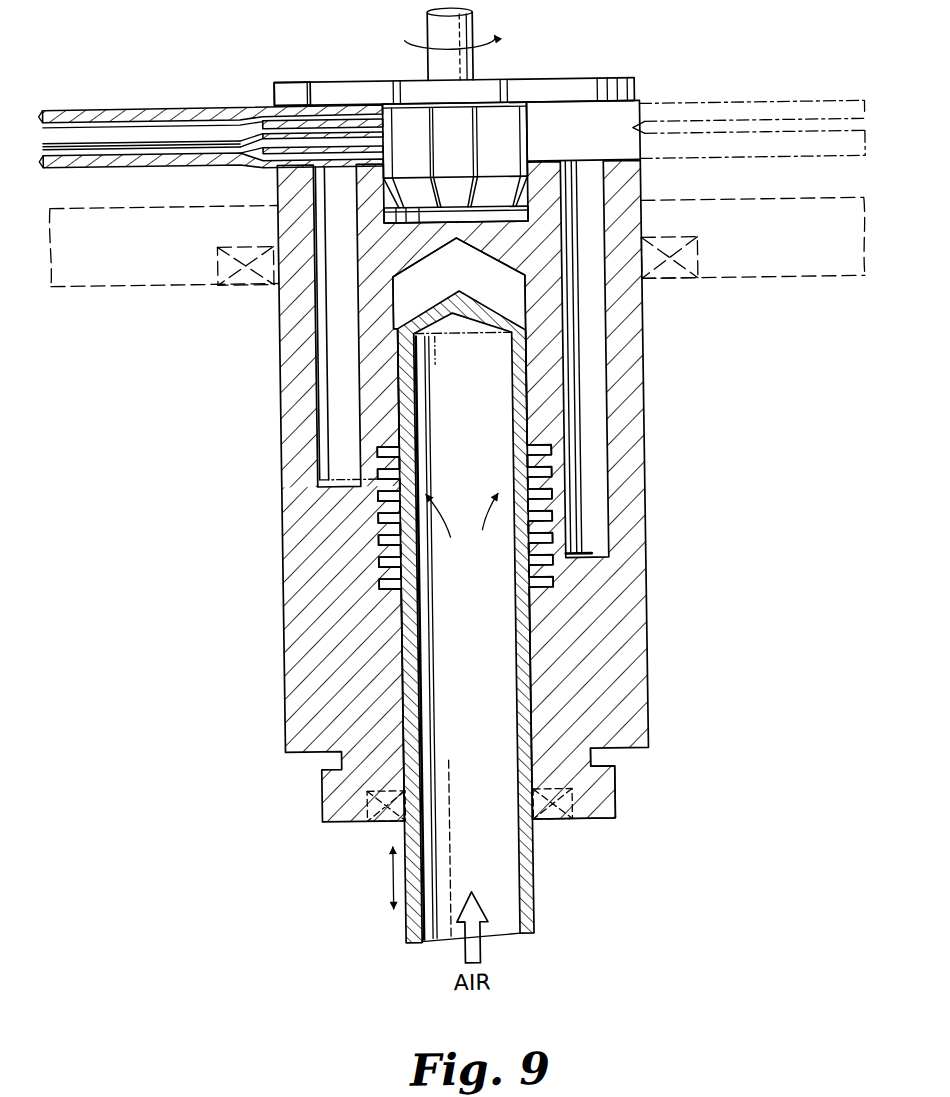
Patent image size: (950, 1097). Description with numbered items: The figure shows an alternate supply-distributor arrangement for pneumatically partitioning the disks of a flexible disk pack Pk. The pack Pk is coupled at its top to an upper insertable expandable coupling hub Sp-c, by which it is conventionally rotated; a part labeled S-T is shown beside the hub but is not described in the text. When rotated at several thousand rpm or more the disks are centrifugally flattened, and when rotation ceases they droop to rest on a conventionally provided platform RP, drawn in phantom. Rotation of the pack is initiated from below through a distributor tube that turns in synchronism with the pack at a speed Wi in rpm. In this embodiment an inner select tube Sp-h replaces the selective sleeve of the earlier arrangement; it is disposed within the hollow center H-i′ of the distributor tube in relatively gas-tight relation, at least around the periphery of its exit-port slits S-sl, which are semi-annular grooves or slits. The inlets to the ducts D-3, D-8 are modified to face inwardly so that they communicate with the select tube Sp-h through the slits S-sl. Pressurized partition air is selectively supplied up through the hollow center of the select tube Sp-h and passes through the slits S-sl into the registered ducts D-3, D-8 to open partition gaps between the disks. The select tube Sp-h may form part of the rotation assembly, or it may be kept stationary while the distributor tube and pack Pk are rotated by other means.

The flexible disk pack Pk is at (126, 104).
The spindle top block S-T is at (276, 107).
The coupling hub Sp-c is at (545, 77).
The platform RP is at (757, 203).
The hollow center of distributor tube H-i′ is at (481, 282).
The exit-port slits S-sl is at (508, 482).
The duct D-3 is at (313, 478).
The duct D-8 is at (596, 553).
The rotational speed Wi is at (624, 802).
The inner select tube Sp-h is at (404, 930).